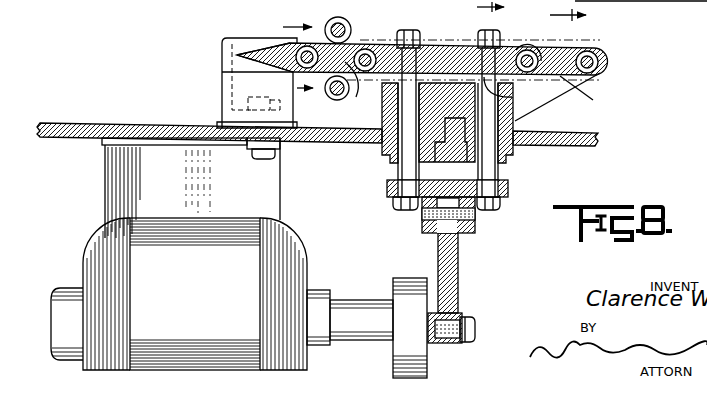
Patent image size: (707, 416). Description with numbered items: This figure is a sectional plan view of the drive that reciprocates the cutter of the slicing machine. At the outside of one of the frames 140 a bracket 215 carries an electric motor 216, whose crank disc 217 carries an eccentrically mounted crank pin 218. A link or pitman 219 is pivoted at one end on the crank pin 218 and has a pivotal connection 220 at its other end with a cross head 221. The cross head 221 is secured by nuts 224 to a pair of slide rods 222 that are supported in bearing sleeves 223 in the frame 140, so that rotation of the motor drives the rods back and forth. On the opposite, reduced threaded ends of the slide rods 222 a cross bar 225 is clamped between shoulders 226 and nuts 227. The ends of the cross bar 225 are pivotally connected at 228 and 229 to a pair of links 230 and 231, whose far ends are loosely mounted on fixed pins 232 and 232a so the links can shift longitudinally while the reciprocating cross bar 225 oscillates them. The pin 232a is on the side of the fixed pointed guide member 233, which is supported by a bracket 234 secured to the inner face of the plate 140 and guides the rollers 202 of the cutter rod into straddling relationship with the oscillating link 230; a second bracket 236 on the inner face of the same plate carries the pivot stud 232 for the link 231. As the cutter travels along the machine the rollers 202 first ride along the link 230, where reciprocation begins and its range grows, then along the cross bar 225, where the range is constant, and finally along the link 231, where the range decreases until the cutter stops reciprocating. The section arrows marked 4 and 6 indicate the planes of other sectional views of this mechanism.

The frame 140 is at (583, 146).
The bracket 215 is at (110, 183).
The electric motor 216 is at (288, 268).
The crank disc 217 is at (412, 278).
The crank pin 218 is at (447, 334).
The link or pitman 219 is at (452, 273).
The pivotal connection 220 is at (470, 214).
The cross head 221 is at (507, 189).
The slide rods 222 is at (398, 170).
The bearing sleeves 223 is at (382, 150).
The nuts 224 is at (396, 206).
The cross bar 225 is at (453, 53).
The shoulders 226 is at (513, 97).
The nuts 227 is at (412, 30).
The pivotal connection 228 is at (367, 50).
The pivotal connection 229 is at (547, 47).
The link 230 is at (361, 90).
The link 231 is at (570, 76).
The fixed pin 232 is at (600, 62).
The fixed pin 232a is at (272, 101).
The pointed guide member 233 is at (273, 50).
The bracket 234 is at (233, 86).
The second bracket 236 is at (575, 88).
The rollers 202 is at (323, 108).
The section line 4 is at (480, 9).
The section line 6 is at (568, 19).